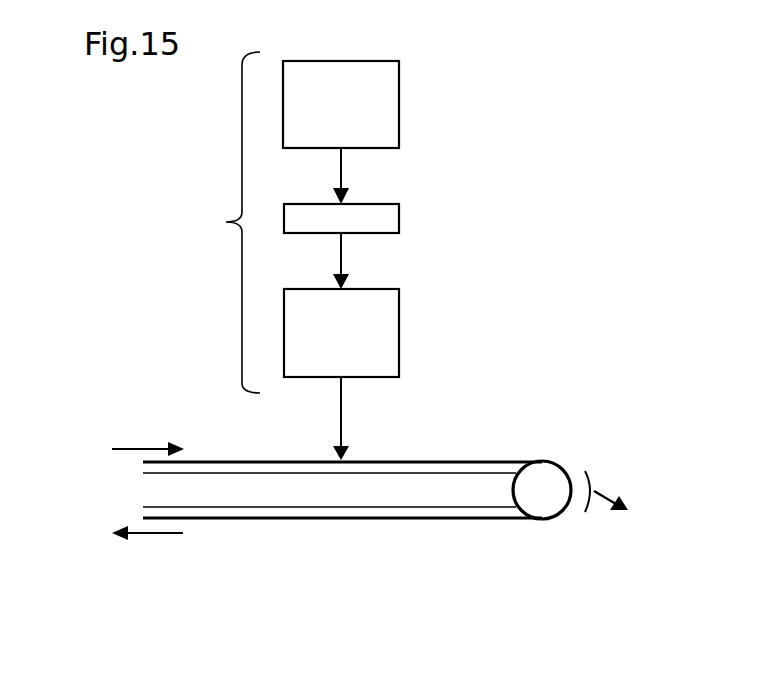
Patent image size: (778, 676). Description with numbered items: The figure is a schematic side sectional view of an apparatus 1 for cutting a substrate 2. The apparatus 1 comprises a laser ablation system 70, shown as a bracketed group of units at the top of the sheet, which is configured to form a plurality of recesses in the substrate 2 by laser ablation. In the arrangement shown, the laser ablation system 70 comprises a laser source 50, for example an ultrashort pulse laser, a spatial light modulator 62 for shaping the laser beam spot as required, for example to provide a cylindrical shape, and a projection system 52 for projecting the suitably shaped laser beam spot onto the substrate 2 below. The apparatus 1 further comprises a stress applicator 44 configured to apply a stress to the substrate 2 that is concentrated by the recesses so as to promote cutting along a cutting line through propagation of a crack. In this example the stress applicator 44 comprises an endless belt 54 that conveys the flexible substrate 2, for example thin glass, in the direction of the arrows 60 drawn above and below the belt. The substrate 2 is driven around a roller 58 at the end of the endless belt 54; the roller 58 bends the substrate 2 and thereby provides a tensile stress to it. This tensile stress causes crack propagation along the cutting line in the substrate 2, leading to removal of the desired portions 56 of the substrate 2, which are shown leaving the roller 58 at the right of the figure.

The apparatus 1 is at (570, 161).
The substrate 2 is at (470, 460).
The stress applicator 44 is at (555, 400).
The laser source 50 is at (341, 104).
The projection system 52 is at (341, 346).
The endless belt 54 is at (420, 512).
The desired portions 56 is at (598, 488).
The roller 58 is at (557, 483).
The arrows 60 is at (153, 449).
The spatial light modulator 62 is at (377, 217).
The laser ablation system 70 is at (225, 222).